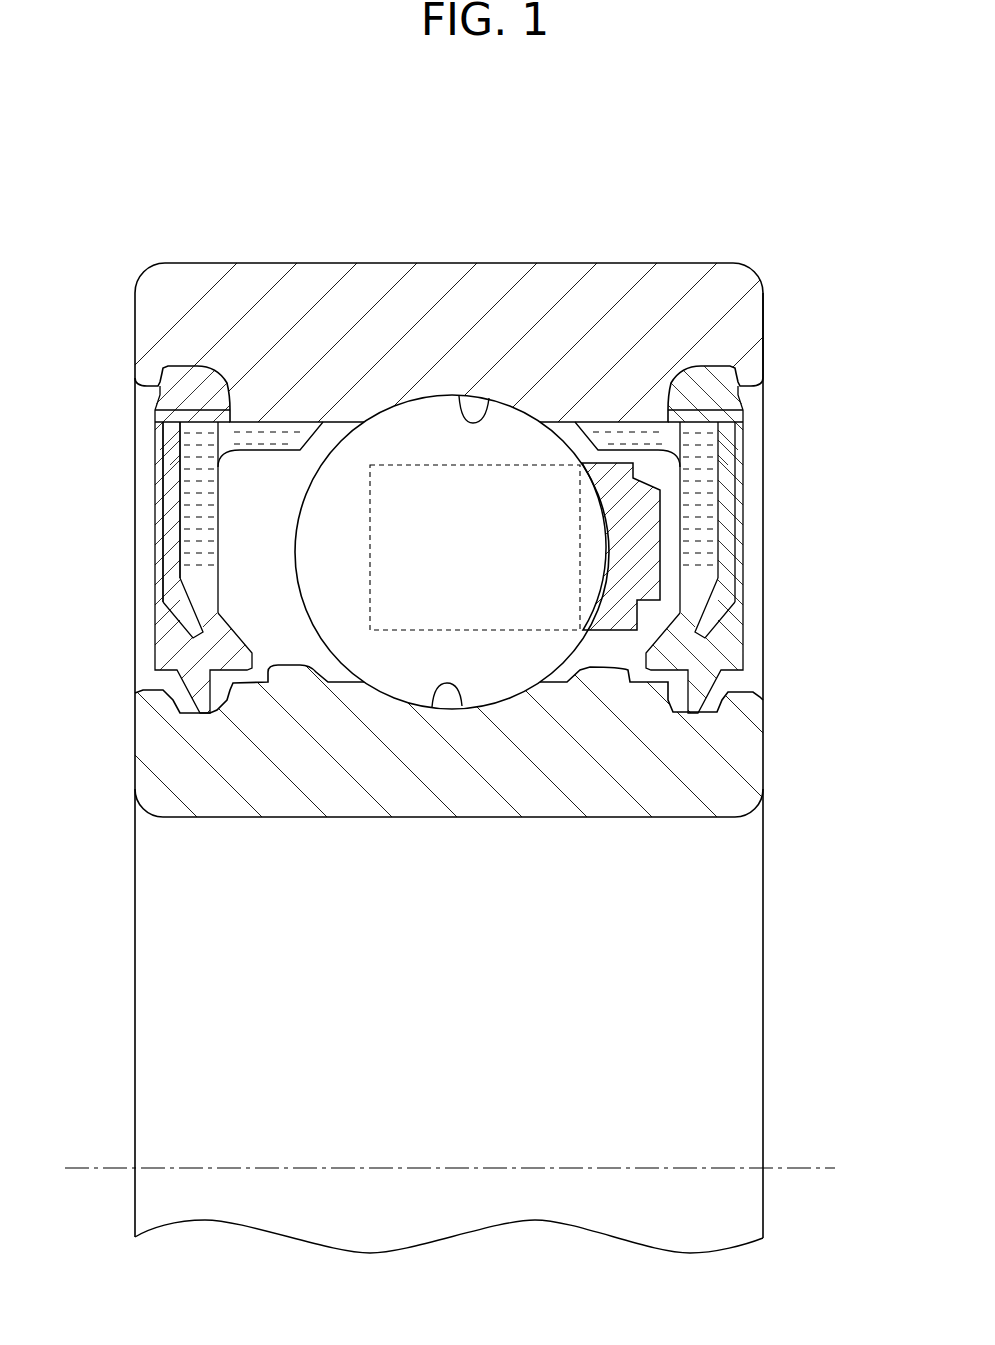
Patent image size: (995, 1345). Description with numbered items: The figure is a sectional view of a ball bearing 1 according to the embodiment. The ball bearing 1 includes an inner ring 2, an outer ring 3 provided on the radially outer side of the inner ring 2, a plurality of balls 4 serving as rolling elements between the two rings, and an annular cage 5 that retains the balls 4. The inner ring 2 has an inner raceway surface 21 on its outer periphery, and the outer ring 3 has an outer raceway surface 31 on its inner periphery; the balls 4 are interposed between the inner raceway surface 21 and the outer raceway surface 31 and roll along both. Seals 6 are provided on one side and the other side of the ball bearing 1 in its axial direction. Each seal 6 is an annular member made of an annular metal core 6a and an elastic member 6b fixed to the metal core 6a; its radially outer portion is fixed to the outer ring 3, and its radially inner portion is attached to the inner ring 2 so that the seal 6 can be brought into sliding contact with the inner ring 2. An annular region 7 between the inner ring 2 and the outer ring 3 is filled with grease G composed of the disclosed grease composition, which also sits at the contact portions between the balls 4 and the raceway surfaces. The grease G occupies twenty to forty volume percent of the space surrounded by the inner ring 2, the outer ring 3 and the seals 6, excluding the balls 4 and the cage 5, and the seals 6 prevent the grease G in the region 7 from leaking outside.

The ball bearing 1 is at (447, 215).
The inner ring 2 is at (657, 797).
The inner raceway surface 21 is at (462, 702).
The outer ring 3 is at (675, 282).
The outer raceway surface 31 is at (489, 412).
The ball 4 is at (405, 440).
The cage 5 is at (650, 520).
The seal 6 is at (448, 545).
The metal core 6a is at (165, 565).
The elastic member 6b is at (155, 443).
The annular region 7 is at (700, 455).
The grease G is at (705, 558).